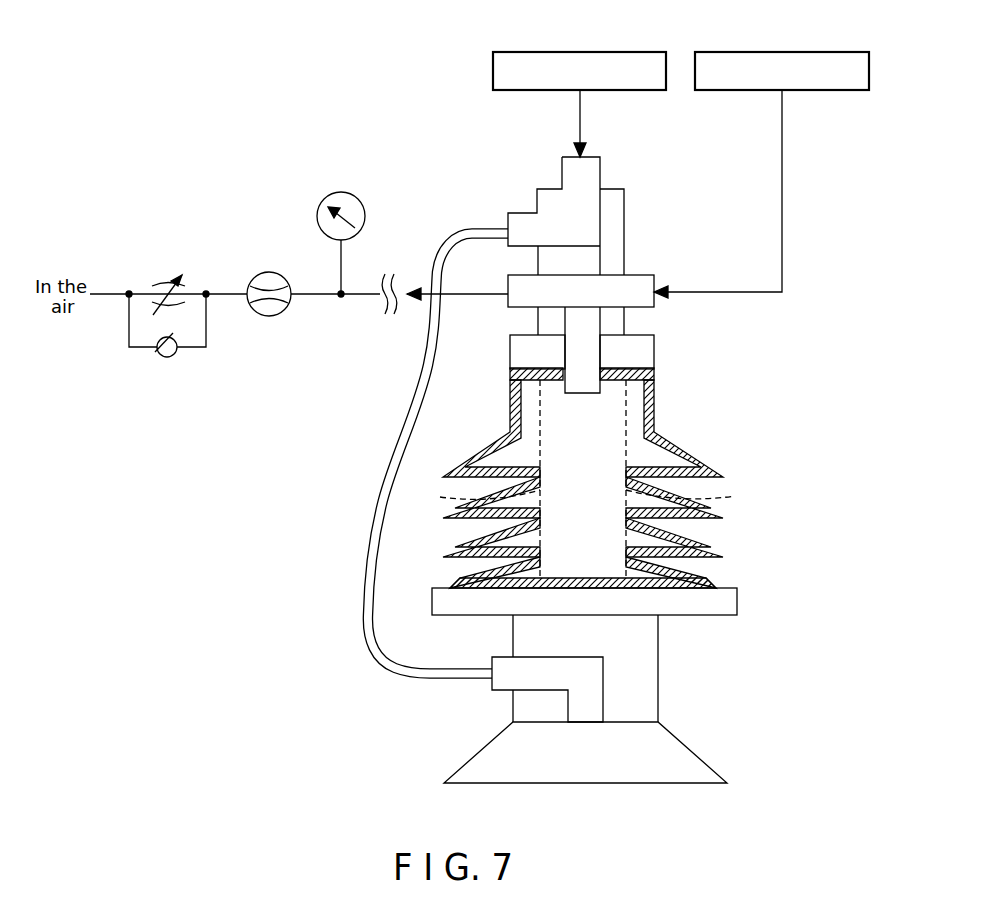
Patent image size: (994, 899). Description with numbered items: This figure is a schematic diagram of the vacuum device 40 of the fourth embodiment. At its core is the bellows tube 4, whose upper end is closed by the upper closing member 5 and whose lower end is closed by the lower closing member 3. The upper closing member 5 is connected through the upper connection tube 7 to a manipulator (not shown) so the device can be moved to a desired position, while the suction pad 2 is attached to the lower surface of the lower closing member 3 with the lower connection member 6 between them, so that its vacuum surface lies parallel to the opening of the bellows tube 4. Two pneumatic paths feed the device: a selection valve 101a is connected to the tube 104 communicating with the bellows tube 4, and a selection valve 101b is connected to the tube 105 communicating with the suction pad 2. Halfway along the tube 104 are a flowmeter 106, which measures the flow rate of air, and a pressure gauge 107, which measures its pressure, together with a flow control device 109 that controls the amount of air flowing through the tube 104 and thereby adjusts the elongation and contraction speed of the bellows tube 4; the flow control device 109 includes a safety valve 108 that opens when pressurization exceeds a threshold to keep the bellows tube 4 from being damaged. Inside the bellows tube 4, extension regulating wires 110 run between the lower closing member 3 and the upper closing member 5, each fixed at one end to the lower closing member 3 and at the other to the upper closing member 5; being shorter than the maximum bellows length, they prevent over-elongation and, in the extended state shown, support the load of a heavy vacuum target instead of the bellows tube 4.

The suction pad 2 is at (690, 742).
The lower closing member 3 is at (737, 600).
The bellows tube 4 is at (688, 446).
The upper closing member 5 is at (655, 350).
The lower connection member 6 is at (660, 670).
The upper connection tube 7 is at (628, 218).
The vacuum device 40 is at (813, 239).
The selection valve 101a is at (781, 52).
The selection valve 101b is at (578, 52).
The tube 104 is at (781, 118).
The tube 105 is at (577, 118).
The flowmeter 106 is at (269, 272).
The pressure gauge 107 is at (340, 192).
The safety valve 108 is at (170, 358).
The flow control device 109 is at (204, 339).
The extension regulating wire 110 is at (589, 494).